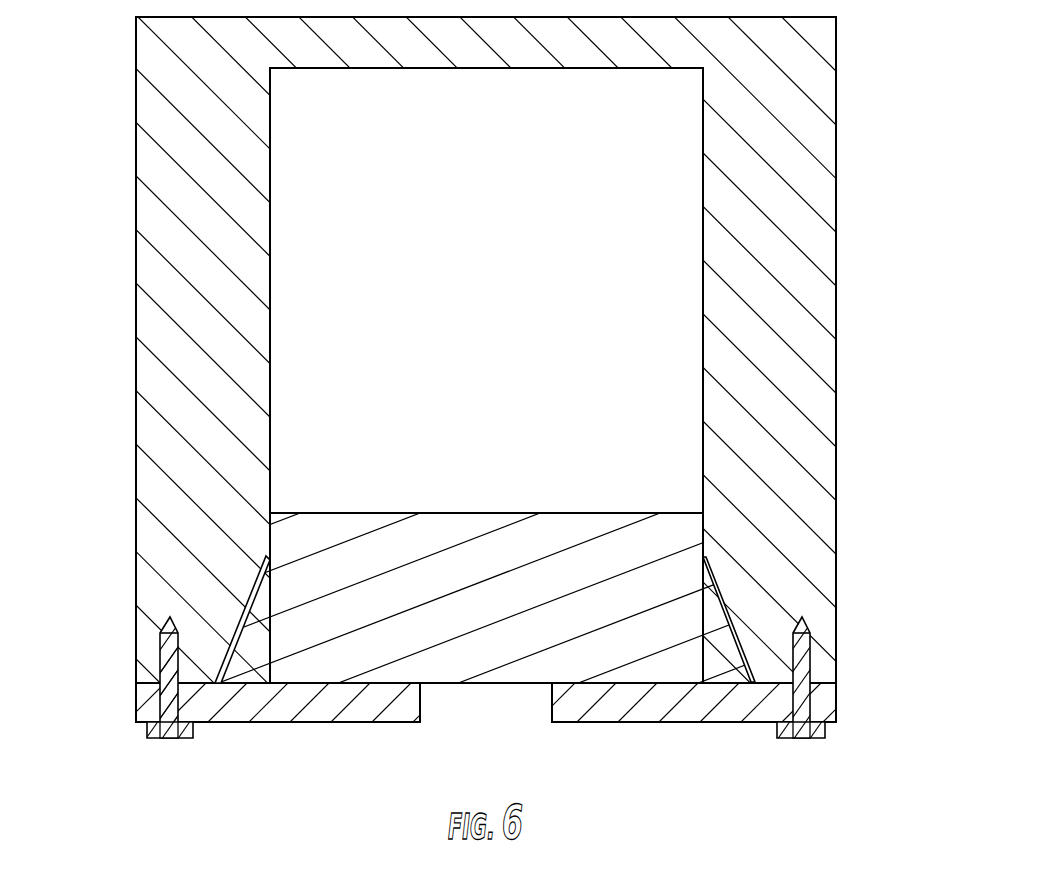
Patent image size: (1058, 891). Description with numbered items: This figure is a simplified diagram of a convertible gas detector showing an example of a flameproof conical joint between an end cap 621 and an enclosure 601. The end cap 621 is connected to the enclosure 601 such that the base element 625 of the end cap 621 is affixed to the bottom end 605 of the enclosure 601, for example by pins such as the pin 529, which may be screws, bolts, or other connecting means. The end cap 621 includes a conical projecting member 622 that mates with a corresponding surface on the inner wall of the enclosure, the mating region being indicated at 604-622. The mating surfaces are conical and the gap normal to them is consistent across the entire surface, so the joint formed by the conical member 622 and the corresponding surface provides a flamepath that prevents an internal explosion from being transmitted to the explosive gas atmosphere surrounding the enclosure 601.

The enclosure 601 is at (135, 272).
The inner wall and conical projecting member interface 604-622 is at (237, 630).
The conical projecting member 622 is at (720, 663).
The bottom end 605 is at (135, 683).
The pin base 529 is at (165, 727).
The base element 625 is at (602, 700).
The end cap 621 is at (673, 722).